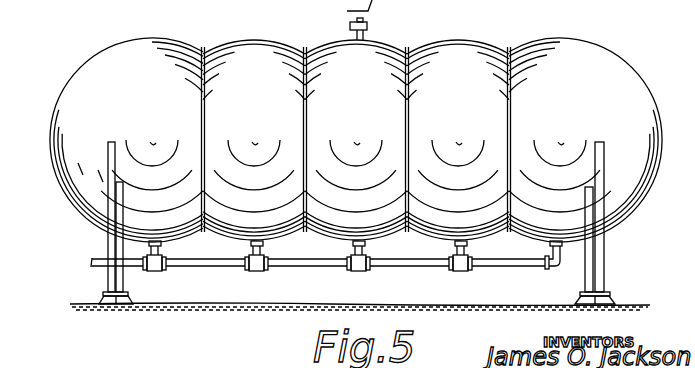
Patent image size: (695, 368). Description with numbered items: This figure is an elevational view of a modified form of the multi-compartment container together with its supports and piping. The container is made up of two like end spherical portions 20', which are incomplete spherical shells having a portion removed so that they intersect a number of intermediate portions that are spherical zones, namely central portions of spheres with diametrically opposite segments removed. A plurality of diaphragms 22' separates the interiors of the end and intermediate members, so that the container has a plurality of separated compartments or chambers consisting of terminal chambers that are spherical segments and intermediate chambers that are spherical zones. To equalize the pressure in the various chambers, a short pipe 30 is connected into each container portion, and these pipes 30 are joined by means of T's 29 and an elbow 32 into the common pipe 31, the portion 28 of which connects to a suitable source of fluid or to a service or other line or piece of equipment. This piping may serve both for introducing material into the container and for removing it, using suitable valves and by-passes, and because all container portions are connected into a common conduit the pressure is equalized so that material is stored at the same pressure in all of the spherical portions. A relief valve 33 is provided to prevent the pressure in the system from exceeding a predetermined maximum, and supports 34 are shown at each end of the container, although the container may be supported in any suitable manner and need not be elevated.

The end spherical portion 20' is at (356, 128).
The diaphragm 22' is at (358, 123).
The relief valve 33 is at (368, 26).
The support 34 is at (108, 242).
The portion of common pipe 28 is at (93, 268).
The short pipe 30 is at (160, 246).
The T 29 is at (157, 271).
The common pipe 31 is at (208, 268).
The elbow 32 is at (553, 268).